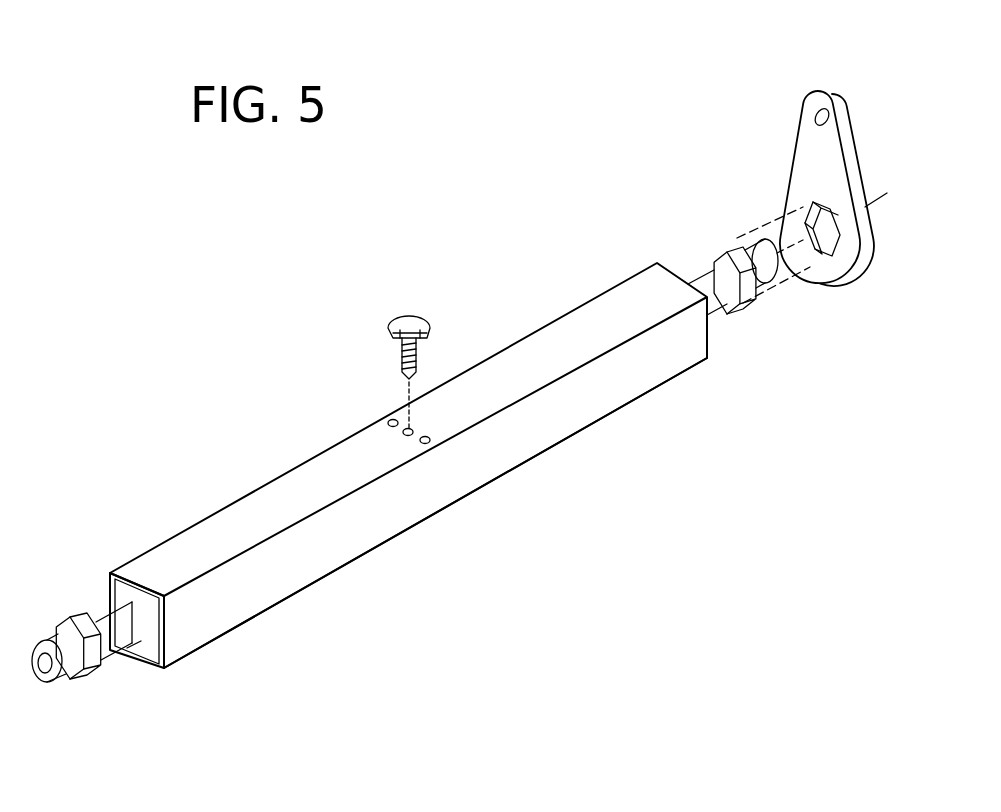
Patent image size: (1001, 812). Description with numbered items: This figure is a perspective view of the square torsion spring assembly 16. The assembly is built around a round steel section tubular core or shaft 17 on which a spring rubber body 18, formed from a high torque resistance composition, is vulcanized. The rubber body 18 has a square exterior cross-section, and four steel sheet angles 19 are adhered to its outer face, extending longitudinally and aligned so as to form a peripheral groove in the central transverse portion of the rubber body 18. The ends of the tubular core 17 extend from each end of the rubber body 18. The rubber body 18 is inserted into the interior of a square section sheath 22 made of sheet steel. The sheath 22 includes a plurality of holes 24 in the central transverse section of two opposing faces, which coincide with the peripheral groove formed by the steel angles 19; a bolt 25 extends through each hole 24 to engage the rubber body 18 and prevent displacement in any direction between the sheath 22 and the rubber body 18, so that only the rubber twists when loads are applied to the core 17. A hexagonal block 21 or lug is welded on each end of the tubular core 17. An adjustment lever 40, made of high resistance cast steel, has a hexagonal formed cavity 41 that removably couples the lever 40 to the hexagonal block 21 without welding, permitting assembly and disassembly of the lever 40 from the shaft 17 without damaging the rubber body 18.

The square torsion spring assembly 16 is at (555, 419).
The tubular core 17 is at (68, 664).
The spring rubber body 18 is at (136, 657).
The steel sheet angles 19 is at (133, 578).
The hexagonal block 21 is at (72, 622).
The square section sheath 22 is at (228, 617).
The holes 24 is at (393, 440).
The bolt 25 is at (431, 333).
The adjustment lever 40 is at (820, 100).
The hexagonal formed cavity 41 is at (830, 257).